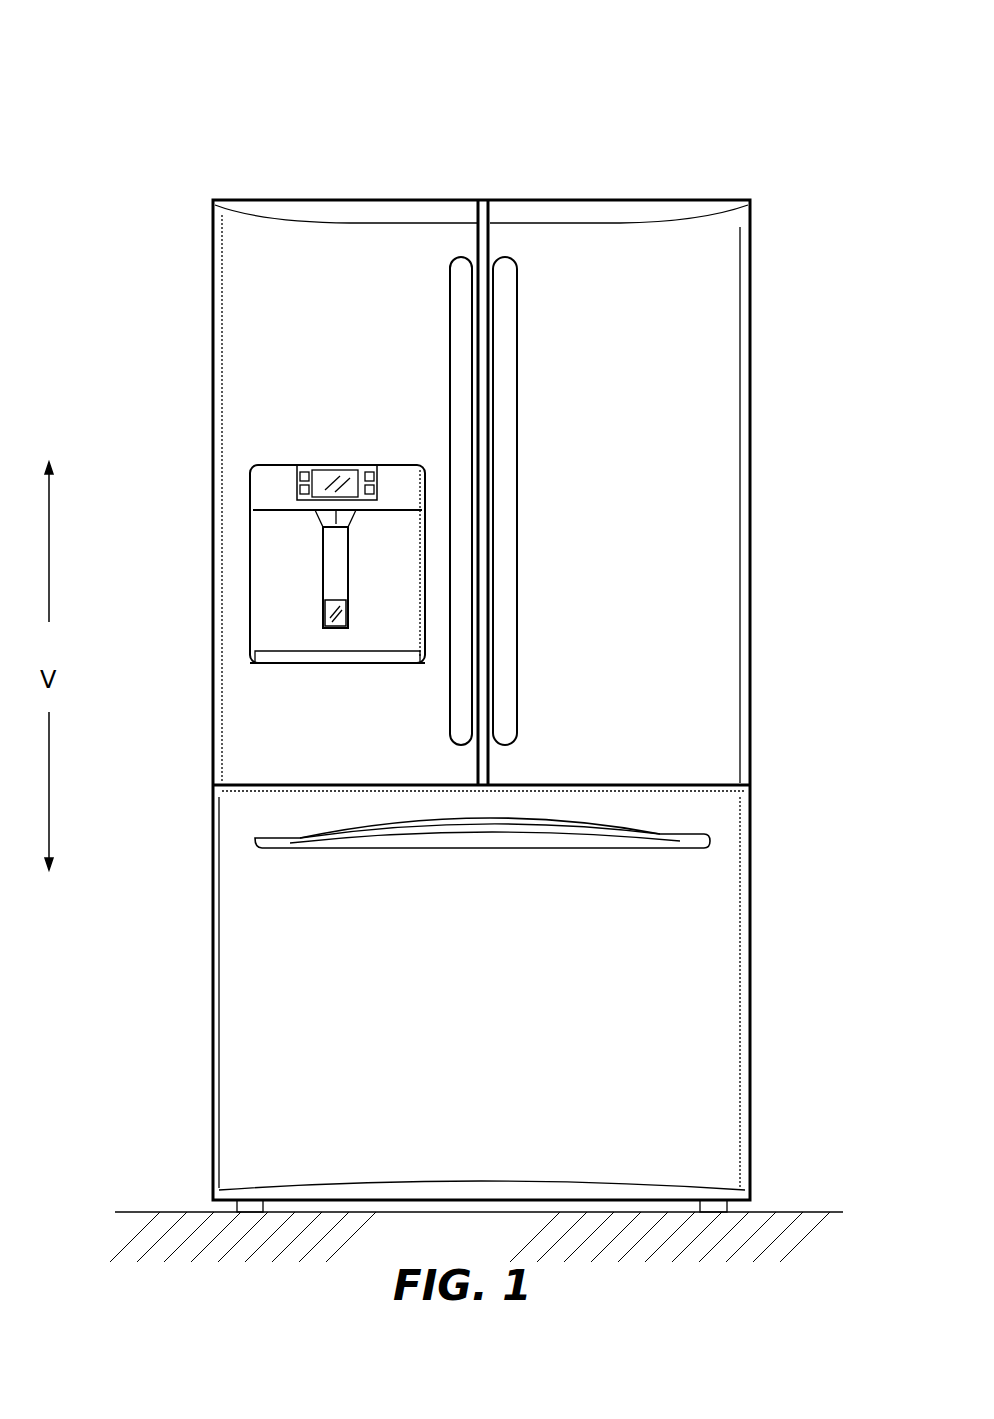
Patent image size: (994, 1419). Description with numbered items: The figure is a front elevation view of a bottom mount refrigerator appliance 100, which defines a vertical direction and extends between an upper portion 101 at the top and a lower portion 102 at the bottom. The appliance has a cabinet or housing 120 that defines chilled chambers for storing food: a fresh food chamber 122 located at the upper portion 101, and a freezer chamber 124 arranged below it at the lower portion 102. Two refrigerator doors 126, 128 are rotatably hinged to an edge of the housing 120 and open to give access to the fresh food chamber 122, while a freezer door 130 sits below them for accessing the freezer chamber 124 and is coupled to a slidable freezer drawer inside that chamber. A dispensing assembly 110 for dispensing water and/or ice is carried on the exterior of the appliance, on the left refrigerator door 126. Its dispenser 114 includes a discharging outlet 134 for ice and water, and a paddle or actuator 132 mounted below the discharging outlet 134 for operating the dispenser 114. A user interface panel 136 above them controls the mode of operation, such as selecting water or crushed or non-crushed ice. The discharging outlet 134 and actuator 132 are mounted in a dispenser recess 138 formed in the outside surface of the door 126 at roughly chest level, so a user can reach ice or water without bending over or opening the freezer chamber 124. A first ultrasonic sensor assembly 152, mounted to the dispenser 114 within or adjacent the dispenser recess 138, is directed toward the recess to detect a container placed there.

The refrigerator appliance 100 is at (730, 100).
The upper portion 101 is at (210, 200).
The lower portion 102 is at (186, 1192).
The dispensing assembly 110 is at (288, 420).
The dispenser 114 is at (282, 607).
The cabinet or housing 120 is at (212, 1008).
The fresh food chamber 122 is at (700, 497).
The freezer chamber 124 is at (700, 937).
The refrigerator door 126 is at (245, 310).
The refrigerator door 128 is at (722, 358).
The freezer door 130 is at (712, 1060).
The paddle or actuator 132 is at (322, 556).
The discharging outlet 134 is at (325, 515).
The user interface panel 136 is at (300, 470).
The dispenser recess 138 is at (307, 625).
The first ultrasonic sensor assembly 152 is at (350, 618).